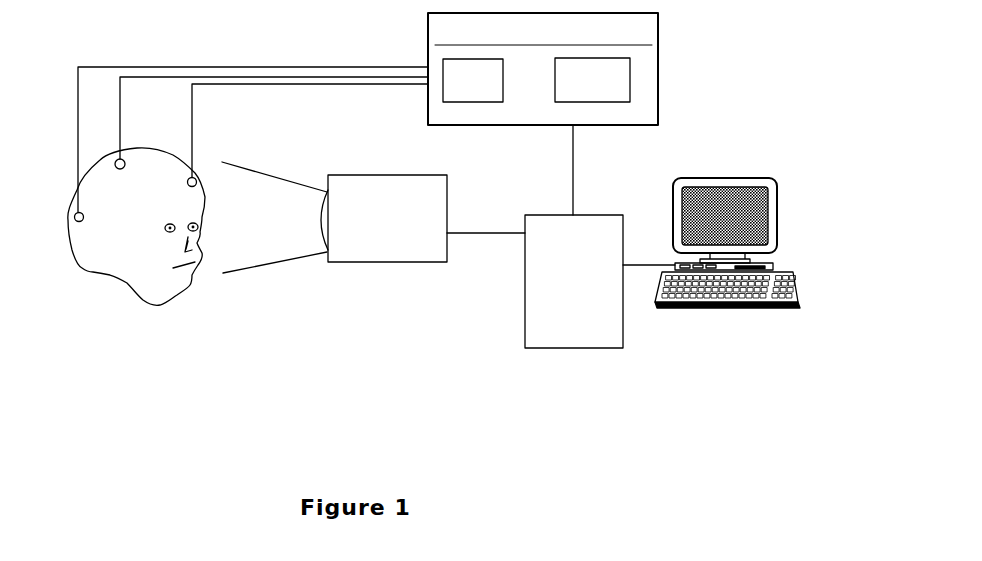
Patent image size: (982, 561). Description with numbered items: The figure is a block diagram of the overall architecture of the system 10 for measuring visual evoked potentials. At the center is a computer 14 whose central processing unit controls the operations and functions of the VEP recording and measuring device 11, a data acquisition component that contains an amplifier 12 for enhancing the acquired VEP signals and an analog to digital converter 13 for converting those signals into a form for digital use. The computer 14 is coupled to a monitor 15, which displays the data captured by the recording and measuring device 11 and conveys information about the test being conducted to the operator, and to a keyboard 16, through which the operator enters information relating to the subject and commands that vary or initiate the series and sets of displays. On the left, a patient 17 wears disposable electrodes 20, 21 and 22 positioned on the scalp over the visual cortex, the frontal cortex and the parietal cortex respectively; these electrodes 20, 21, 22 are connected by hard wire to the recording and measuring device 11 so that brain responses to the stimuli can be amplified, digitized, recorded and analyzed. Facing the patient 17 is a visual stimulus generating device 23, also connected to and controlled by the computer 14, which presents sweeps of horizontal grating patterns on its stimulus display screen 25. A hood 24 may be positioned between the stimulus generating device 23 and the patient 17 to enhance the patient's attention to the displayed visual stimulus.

The system 10 is at (236, 405).
The visual evoked potential recording and measuring device 11 is at (658, 73).
The amplifier 12 is at (477, 102).
The analog to digital converter 13 is at (555, 78).
The computer 14 is at (525, 312).
The monitor 15 is at (742, 178).
The keyboard 16 is at (773, 309).
The patient 17 is at (80, 247).
The disposable electrode 20 is at (84, 217).
The disposable electrode 21 is at (188, 187).
The disposable electrode 22 is at (125, 167).
The visual stimulus generating device 23 is at (418, 262).
The hood 24 is at (268, 172).
The stimulus display screen 25 is at (317, 220).